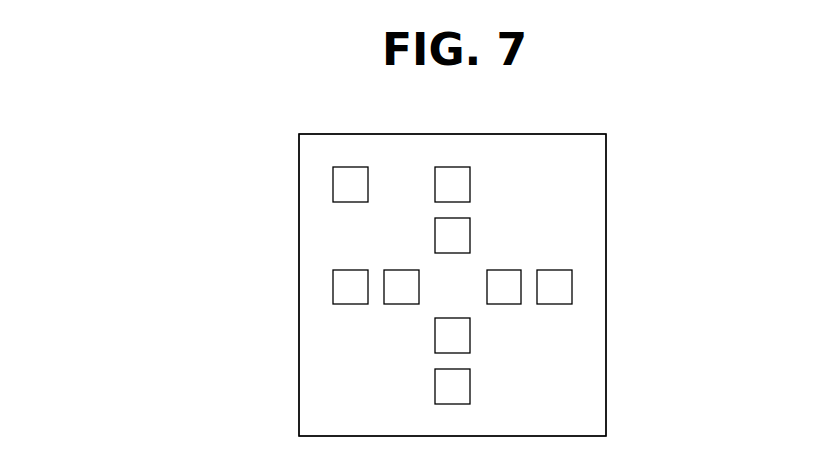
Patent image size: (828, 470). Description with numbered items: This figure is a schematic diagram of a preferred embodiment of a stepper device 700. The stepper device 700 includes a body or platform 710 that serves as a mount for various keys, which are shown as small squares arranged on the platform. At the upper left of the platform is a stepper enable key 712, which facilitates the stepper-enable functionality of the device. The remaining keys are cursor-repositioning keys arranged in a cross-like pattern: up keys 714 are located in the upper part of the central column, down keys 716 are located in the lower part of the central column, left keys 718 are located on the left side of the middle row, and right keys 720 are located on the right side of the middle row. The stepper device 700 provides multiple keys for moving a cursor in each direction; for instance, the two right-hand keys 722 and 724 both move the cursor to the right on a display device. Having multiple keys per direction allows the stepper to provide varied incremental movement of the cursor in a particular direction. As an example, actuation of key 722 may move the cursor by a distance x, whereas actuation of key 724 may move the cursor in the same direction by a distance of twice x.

The stepper device 700 is at (175, 145).
The body or platform 710 is at (571, 134).
The stepper enable key 712 is at (348, 167).
The up keys 714 is at (509, 208).
The down keys 716 is at (376, 355).
The left keys 718 is at (390, 241).
The right keys 720 is at (517, 347).
The key 722 is at (503, 270).
The key 724 is at (553, 304).